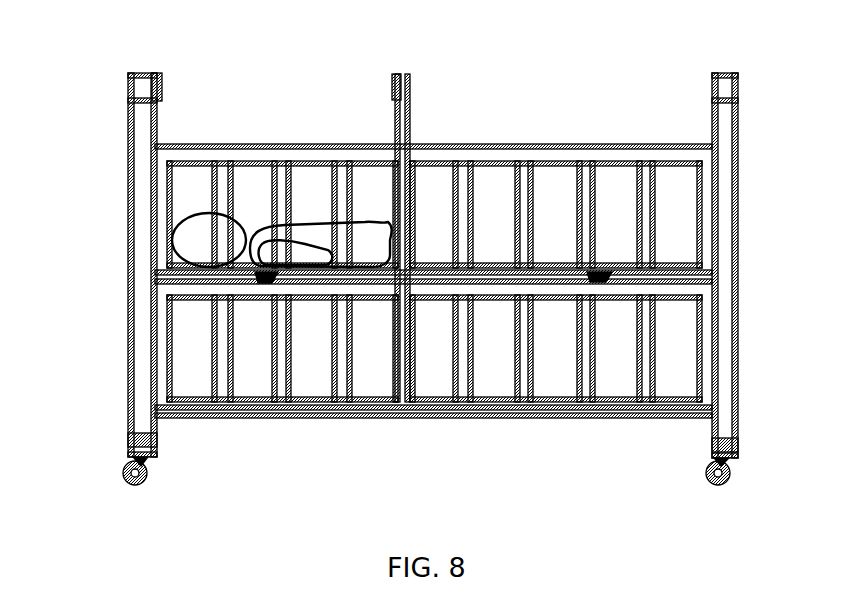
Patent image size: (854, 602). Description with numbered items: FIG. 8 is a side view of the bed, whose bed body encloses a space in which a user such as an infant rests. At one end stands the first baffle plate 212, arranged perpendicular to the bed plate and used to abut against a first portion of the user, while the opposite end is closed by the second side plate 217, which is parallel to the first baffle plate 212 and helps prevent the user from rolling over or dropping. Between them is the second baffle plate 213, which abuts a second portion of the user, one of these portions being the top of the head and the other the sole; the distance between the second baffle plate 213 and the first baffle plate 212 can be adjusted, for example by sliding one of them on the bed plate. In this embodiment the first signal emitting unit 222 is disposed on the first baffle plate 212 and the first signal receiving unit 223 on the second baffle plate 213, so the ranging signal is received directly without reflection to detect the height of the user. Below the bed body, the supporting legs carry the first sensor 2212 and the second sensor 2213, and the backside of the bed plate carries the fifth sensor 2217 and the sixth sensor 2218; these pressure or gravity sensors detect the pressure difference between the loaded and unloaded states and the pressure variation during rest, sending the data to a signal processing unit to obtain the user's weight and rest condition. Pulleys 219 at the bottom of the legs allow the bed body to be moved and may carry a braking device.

The first baffle plate 212 is at (133, 73).
The first signal emitting unit 222 is at (158, 76).
The first signal receiving unit 223 is at (395, 74).
The second baffle plate 213 is at (410, 78).
The second side plate 217 is at (738, 80).
The fifth sensor 2217 is at (258, 280).
The sixth sensor 2218 is at (610, 273).
The first sensor 2212 is at (128, 444).
The second sensor 2213 is at (738, 432).
The pulleys 219 is at (123, 474).